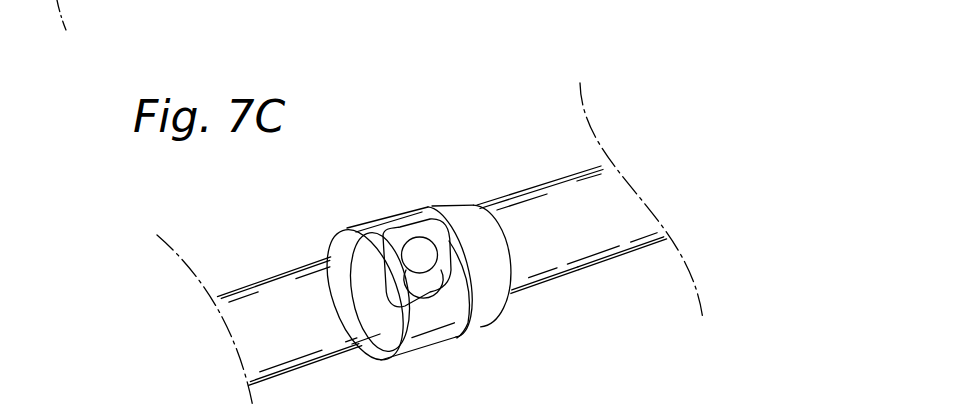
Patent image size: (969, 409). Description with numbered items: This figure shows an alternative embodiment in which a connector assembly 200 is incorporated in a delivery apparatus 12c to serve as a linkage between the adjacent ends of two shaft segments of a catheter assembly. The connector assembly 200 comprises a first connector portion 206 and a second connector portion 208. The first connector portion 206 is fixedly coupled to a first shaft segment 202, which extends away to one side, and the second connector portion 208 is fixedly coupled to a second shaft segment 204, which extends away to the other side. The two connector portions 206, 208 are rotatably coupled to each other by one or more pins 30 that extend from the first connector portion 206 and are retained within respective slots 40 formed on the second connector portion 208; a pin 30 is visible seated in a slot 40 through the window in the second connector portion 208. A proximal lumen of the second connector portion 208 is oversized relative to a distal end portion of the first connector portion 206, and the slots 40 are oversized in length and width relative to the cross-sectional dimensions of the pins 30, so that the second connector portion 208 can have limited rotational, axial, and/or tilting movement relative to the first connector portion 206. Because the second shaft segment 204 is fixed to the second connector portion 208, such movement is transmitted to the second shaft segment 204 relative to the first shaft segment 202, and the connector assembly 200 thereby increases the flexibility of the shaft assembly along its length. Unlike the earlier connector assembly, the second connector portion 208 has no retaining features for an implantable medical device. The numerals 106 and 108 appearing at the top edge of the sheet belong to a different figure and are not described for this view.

The delivery apparatus 12c is at (614, 58).
The connector assembly 200 is at (405, 268).
The first shaft segment 202 is at (563, 182).
The second shaft segment 204 is at (305, 270).
The first connector portion 206 is at (528, 287).
The second connector portion 208 is at (365, 228).
The pins 30 is at (428, 263).
The slots 40 is at (430, 296).
The tube 106 is at (263, 13).
The fitting 108 is at (339, 7).